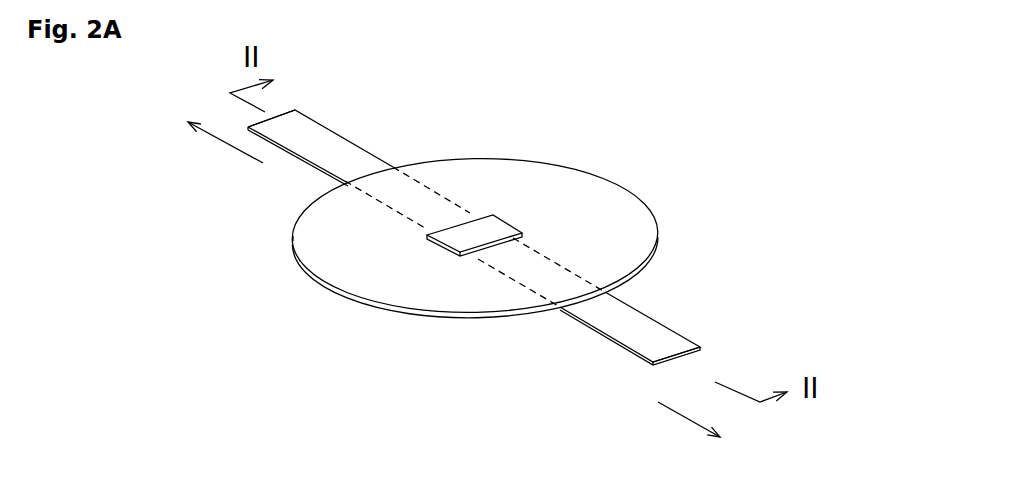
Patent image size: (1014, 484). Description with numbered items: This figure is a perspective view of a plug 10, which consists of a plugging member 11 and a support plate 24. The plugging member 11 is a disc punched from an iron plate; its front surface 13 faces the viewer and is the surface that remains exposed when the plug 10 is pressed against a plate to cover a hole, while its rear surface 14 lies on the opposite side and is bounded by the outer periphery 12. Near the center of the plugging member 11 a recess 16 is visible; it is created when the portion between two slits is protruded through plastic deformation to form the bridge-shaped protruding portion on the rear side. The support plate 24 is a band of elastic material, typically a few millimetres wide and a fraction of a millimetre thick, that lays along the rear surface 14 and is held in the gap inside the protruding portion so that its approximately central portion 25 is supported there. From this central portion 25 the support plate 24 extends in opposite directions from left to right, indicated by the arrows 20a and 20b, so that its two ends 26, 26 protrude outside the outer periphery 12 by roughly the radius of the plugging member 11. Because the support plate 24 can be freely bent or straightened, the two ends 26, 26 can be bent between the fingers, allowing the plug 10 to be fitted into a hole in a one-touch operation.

The plug 10 is at (677, 173).
The plugging member 11 is at (562, 192).
The outer periphery 12 is at (297, 263).
The surface 13 is at (473, 172).
The rear surface 14 is at (404, 322).
The recess 16 is at (503, 225).
The direction from left to right 20a is at (222, 142).
The direction from left to right 20b is at (678, 414).
The support plate 24 is at (625, 315).
The center portion of the support plate 25 is at (479, 237).
The ends of the support plate 26 is at (279, 113).